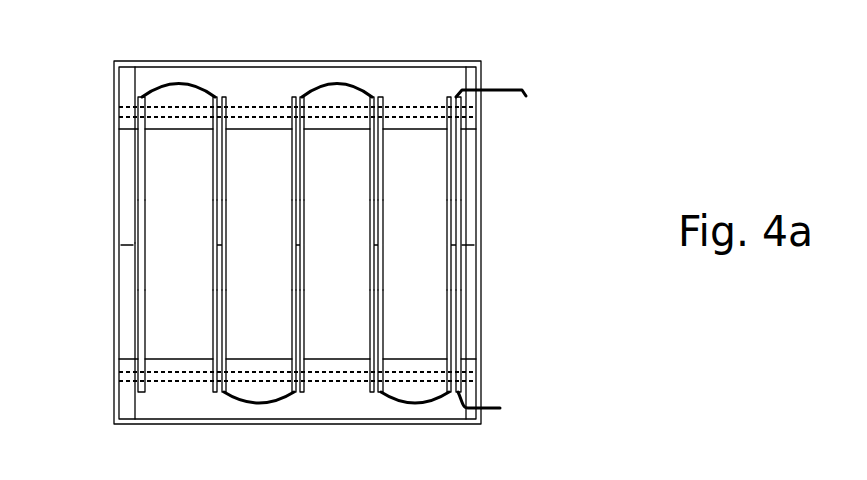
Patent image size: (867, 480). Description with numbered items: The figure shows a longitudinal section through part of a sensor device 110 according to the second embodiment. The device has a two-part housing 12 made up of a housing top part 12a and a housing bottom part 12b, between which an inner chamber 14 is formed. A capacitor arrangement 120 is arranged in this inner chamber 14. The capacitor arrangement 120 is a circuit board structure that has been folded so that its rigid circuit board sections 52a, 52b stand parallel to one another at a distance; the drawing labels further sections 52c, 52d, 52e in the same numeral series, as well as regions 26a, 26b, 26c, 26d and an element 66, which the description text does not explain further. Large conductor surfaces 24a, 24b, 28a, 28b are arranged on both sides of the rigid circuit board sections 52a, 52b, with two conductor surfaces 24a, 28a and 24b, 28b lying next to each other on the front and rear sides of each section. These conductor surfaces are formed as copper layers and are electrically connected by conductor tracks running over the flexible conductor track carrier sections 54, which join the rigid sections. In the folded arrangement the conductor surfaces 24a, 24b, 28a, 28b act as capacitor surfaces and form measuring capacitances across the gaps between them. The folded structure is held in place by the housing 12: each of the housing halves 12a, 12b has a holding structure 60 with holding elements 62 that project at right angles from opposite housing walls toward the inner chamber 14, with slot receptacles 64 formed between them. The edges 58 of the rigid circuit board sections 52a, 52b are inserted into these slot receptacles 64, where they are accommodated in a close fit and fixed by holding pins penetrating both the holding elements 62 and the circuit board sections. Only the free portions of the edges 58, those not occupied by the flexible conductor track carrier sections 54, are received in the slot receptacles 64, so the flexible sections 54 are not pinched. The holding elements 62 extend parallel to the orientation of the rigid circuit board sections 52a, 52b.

The housing 12 is at (88, 58).
The housing top part 12a is at (114, 190).
The housing bottom part 12b is at (114, 297).
The inner chamber 14 is at (428, 298).
The conductor surface 24a is at (138, 158).
The conductor surface 24b is at (213, 166).
The first cell compartment 26a is at (198, 209).
The second cell compartment 26b is at (276, 209).
The third cell compartment 26c is at (352, 204).
The fourth cell compartment 26d is at (431, 207).
The conductor surface 28a is at (138, 323).
The conductor surface 28b is at (370, 327).
The rigid circuit board section 52a is at (138, 245).
The rigid circuit board section 52b is at (213, 246).
The separator 52c is at (292, 246).
The separator 52d is at (370, 245).
The separator 52e is at (447, 245).
The flexible conductor track carrier section 54 is at (342, 87).
The edge 58 is at (218, 96).
The holding structure 60 is at (110, 82).
The holding element 62 is at (253, 85).
The slot receptacle 64 is at (222, 80).
The seal 66 is at (474, 113).
The sensor device 110 is at (568, 133).
The capacitor arrangement 120 is at (390, 150).